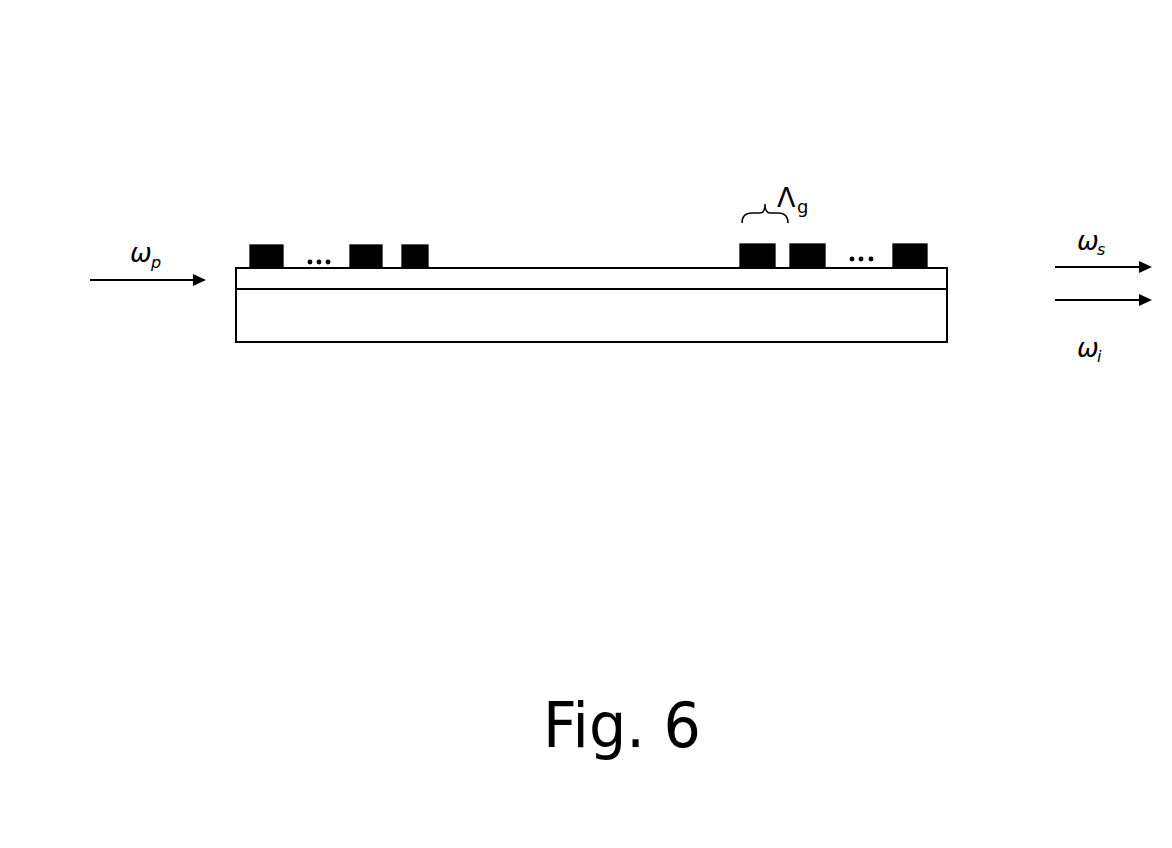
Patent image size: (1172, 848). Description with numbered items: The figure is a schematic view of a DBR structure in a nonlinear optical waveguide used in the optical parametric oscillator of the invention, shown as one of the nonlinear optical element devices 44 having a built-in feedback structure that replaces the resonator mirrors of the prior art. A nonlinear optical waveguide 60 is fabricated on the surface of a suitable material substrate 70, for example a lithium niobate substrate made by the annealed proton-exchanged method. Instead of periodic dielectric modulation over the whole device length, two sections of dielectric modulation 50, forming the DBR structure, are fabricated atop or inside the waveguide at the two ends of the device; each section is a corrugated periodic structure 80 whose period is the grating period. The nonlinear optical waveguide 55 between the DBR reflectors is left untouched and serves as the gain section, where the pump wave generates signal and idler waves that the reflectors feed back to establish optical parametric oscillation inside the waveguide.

The nonlinear optical element with built-in DBR structure 44 is at (240, 365).
The section of dielectric modulation 50 is at (427, 232).
The nonlinear optical waveguide between the DBR reflectors 55 is at (445, 262).
The nonlinear optical waveguide 60 is at (262, 285).
The substrate 70 is at (953, 290).
The corrugated periodic structure 80 is at (928, 226).